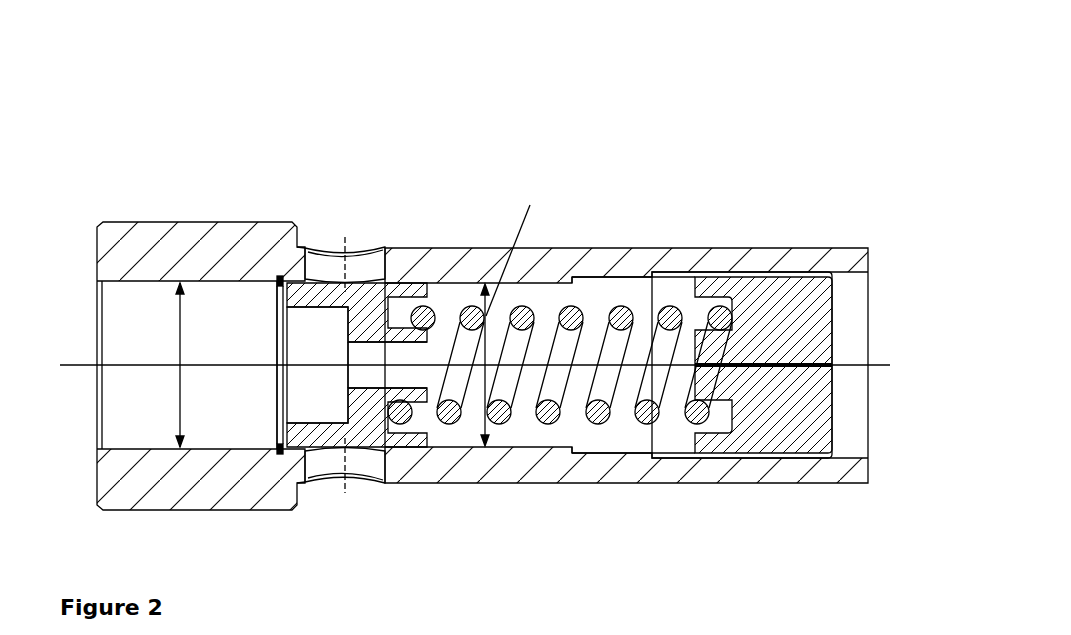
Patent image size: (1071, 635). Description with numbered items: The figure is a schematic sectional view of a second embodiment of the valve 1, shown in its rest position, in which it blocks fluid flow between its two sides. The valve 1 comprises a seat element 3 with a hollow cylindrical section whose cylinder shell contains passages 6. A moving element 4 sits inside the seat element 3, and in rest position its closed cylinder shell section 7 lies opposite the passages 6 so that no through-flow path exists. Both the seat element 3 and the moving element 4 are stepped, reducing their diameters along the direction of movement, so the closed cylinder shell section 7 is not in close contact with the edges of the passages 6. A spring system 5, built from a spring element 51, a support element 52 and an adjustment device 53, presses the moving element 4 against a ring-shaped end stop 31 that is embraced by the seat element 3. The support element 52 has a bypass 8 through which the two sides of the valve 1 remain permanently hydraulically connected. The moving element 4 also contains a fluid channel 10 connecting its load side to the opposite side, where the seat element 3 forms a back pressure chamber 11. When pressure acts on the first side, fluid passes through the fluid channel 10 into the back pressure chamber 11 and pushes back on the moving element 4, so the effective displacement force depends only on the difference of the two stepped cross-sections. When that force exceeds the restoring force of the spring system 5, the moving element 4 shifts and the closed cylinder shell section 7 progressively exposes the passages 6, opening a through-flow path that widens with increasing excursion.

The valve 1 is at (490, 86).
The seat element 3 is at (157, 495).
The ring-shaped end stop 31 is at (277, 278).
The moving element 4 is at (362, 283).
The spring system 5 is at (545, 424).
The passages 6 is at (323, 255).
The closed cylinder shell section 7 is at (303, 247).
The bypass 8 is at (772, 363).
The fluid channel 10 is at (383, 352).
The back pressure chamber 11 is at (547, 302).
The spring element 51 is at (597, 440).
The support element 52 is at (770, 432).
The adjustment device 53 is at (802, 460).